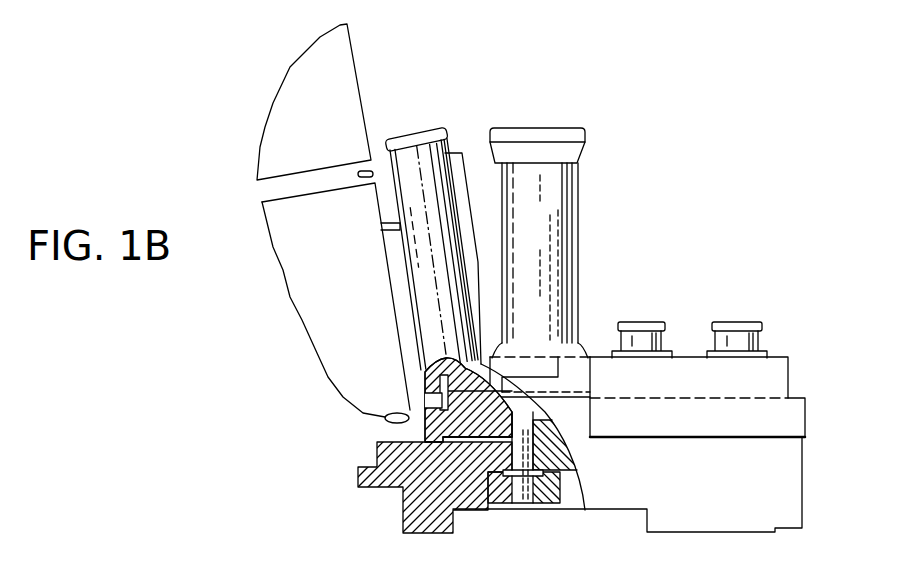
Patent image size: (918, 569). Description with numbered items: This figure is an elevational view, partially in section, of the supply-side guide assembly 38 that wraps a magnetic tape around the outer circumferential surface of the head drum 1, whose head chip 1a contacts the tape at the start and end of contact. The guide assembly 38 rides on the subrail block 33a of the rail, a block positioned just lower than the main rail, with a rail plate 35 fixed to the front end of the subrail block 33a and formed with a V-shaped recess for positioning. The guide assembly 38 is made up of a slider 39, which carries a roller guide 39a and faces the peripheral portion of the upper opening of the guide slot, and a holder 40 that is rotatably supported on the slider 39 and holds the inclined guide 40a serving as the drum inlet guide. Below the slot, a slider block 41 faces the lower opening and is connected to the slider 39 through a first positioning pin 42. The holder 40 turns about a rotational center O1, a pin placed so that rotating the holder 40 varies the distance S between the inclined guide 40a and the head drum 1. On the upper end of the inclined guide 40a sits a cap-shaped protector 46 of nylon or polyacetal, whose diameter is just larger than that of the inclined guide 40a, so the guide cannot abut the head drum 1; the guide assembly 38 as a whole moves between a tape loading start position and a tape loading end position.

The head drum 1 is at (353, 66).
The head chip 1a is at (360, 165).
The distance S is at (380, 225).
The cap-shaped protector 46 is at (403, 133).
The inclined guide 40a is at (445, 151).
The guide assembly 38 is at (582, 243).
The roller guide 39a is at (559, 229).
The rail plate 35 is at (780, 373).
The subrail block 33a is at (785, 489).
The holder 40 is at (430, 370).
The rotational center O1 is at (437, 390).
The slider 39 is at (387, 418).
The first positioning pin 42 is at (550, 458).
The slider block 41 is at (505, 505).